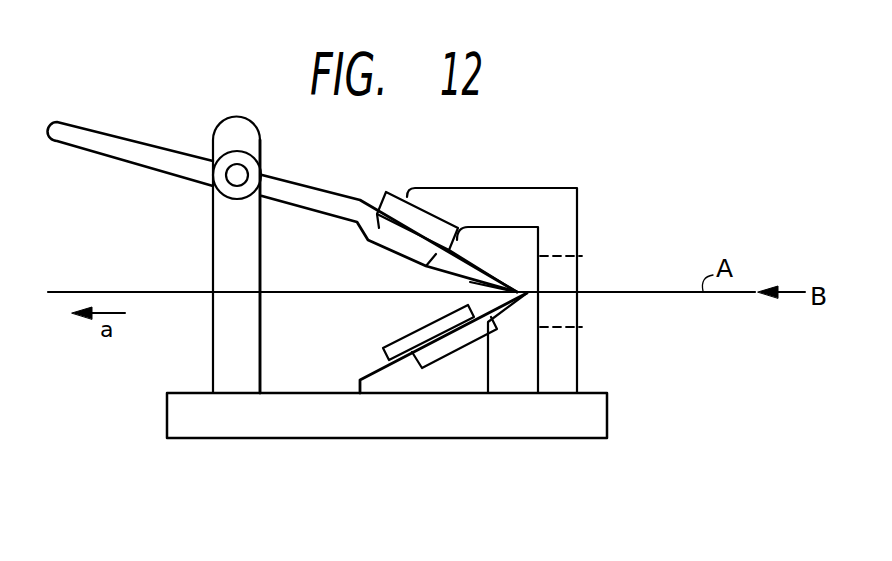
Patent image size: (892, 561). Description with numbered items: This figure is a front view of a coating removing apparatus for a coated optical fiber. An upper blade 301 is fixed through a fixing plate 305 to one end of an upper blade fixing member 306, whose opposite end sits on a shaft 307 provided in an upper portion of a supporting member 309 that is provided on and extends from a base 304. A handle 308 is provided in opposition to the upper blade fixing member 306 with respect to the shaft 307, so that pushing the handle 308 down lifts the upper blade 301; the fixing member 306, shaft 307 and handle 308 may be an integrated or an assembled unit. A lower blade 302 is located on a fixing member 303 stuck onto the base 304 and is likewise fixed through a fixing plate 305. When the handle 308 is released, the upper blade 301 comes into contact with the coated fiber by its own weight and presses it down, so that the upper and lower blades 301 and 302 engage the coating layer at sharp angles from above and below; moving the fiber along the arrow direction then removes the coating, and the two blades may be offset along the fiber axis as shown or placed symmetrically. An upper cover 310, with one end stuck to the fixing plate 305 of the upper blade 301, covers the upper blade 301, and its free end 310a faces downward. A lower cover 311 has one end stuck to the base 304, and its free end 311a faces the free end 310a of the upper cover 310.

The upper blade 301 is at (473, 267).
The lower blade 302 is at (500, 313).
The fixing member 303 is at (445, 380).
The base 304 is at (261, 428).
The fixing plate 305 is at (423, 226).
The upper blade fixing member 306 is at (336, 202).
The shaft 307 is at (233, 178).
The handle 308 is at (133, 148).
The supporting member 309 is at (218, 348).
The upper cover 310 is at (571, 192).
The free end 310a is at (578, 246).
The lower cover 311 is at (570, 344).
The free end 311a is at (578, 330).